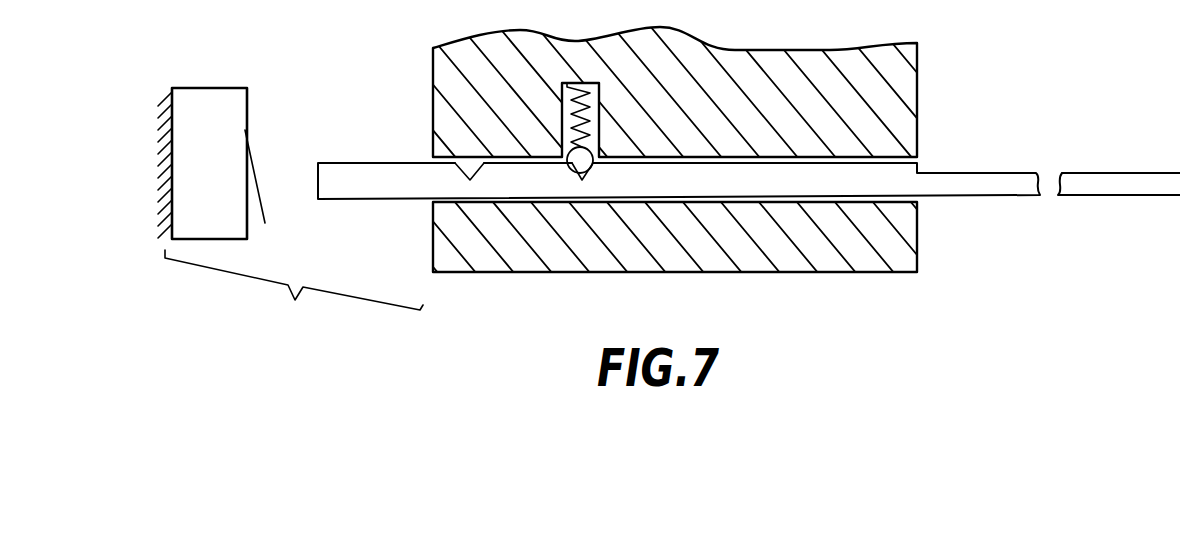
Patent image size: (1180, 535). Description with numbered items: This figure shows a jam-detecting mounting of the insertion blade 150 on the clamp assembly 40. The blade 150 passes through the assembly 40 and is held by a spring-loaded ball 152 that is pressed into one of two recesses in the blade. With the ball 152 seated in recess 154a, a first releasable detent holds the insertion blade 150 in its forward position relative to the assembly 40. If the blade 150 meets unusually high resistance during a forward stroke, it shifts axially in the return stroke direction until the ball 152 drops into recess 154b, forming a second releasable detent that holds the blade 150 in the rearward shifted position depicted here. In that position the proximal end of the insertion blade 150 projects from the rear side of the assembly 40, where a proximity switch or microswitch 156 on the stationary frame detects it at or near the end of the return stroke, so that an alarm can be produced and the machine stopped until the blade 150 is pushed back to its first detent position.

The clamp assembly 40 is at (805, 282).
The insertion blade 150 is at (1088, 178).
The spring-loaded ball 152 is at (595, 165).
The recess 154a is at (465, 168).
The recess 154b is at (576, 178).
The microswitch 156 is at (222, 123).